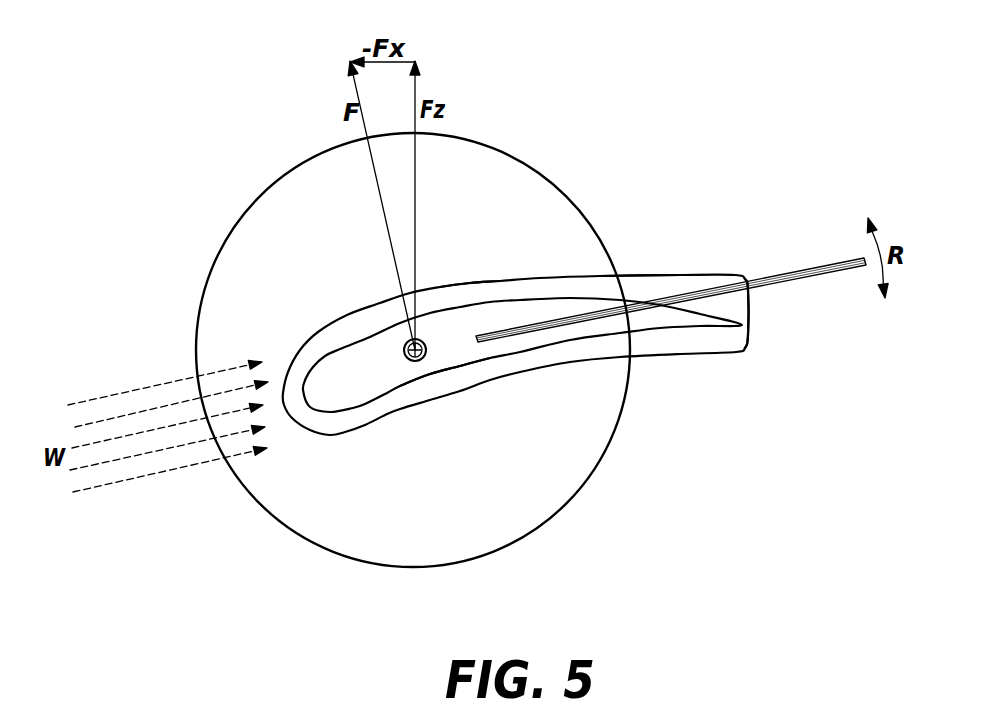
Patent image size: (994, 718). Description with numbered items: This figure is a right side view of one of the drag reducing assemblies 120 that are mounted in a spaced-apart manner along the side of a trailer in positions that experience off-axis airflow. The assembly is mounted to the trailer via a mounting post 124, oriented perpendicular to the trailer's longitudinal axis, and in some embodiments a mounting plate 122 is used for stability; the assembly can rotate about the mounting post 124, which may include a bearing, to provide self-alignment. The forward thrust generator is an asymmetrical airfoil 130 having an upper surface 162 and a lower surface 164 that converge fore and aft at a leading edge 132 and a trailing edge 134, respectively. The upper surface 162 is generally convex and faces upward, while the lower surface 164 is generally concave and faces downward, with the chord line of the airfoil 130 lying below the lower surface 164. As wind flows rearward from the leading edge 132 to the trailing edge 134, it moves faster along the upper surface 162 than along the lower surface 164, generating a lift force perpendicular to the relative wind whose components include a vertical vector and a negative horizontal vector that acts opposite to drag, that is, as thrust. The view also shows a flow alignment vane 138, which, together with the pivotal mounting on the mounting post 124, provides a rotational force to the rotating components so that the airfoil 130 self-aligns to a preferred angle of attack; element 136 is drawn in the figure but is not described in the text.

The drag reducing assembly 120 is at (670, 105).
The mounting plate 122 is at (327, 155).
The mounting post 124 is at (415, 338).
The asymmetrical airfoil 130 is at (365, 378).
The leading edge 132 is at (307, 405).
The trailing edge 134 is at (746, 326).
The upper surface 136 is at (634, 276).
The flow alignment vane 138 is at (778, 278).
The upper surface 162 is at (465, 283).
The lower surface 164 is at (467, 362).